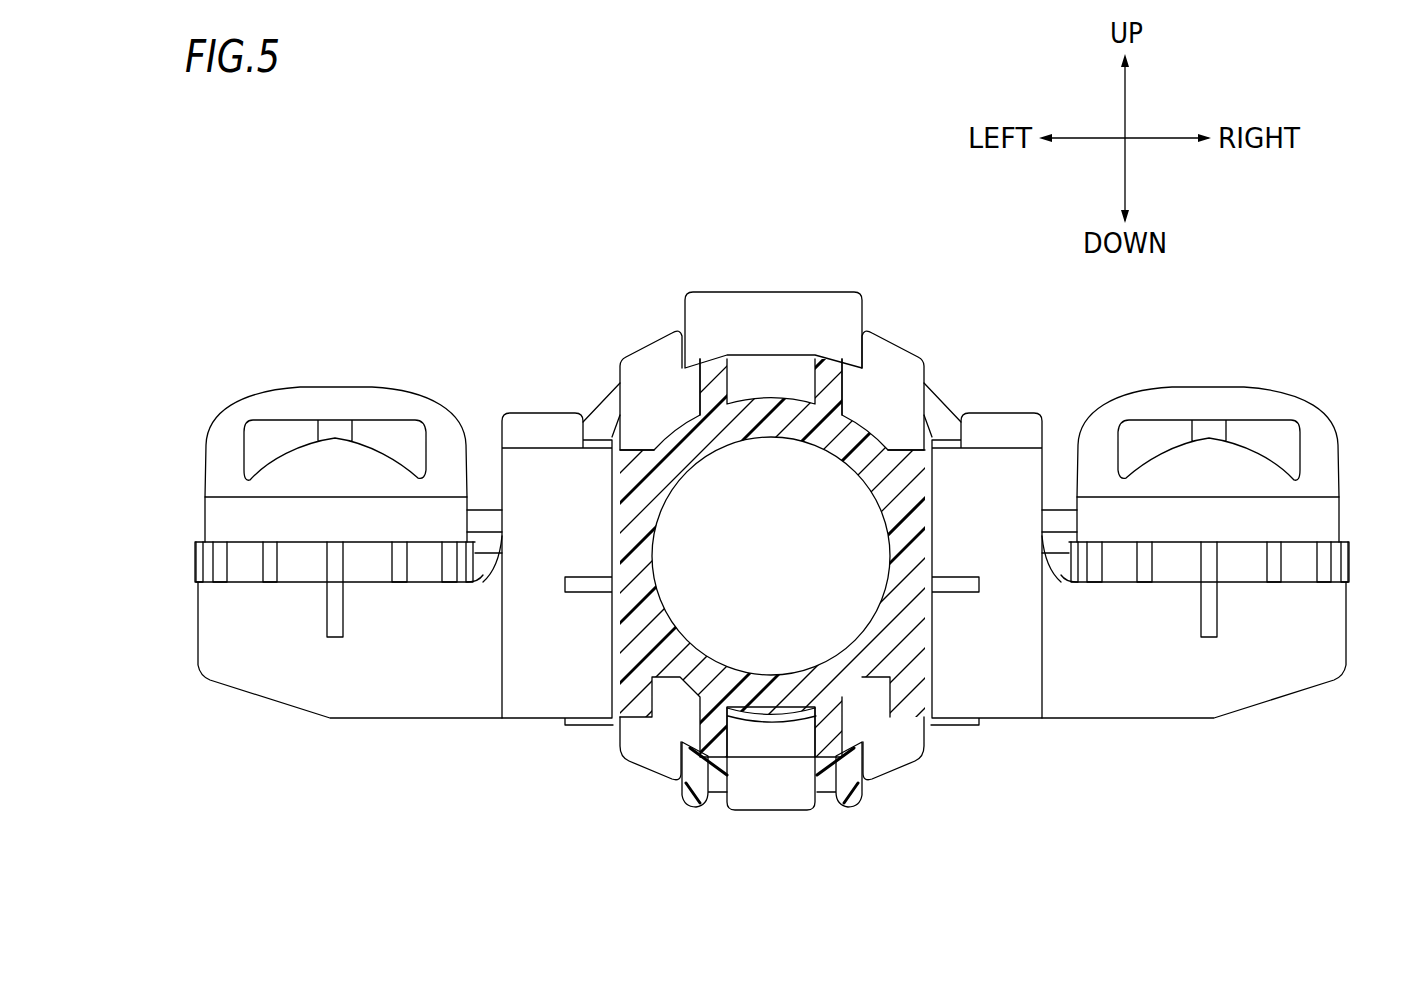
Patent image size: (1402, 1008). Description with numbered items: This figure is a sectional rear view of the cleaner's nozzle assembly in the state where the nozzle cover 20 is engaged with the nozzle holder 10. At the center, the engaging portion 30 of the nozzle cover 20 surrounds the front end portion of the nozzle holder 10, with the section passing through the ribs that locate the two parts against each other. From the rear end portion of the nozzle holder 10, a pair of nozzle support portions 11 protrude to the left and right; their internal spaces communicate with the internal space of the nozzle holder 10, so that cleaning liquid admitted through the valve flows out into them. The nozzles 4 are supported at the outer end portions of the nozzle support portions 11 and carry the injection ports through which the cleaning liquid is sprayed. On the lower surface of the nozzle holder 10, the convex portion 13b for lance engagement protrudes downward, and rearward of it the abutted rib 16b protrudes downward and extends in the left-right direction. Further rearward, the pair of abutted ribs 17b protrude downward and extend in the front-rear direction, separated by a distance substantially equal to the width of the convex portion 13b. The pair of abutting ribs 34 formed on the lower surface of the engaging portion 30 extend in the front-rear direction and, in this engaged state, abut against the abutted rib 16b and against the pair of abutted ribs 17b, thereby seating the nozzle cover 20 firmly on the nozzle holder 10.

The nozzle 4 is at (361, 400).
The nozzle holder 10 is at (532, 735).
The nozzle support portion 11 is at (383, 706).
The convex portion 13b is at (769, 812).
The abutted rib 16b is at (781, 760).
The abutted rib 17b is at (770, 817).
The nozzle cover 20 is at (826, 276).
The engaging portion 30 is at (798, 271).
The abutting rib 34 is at (690, 805).